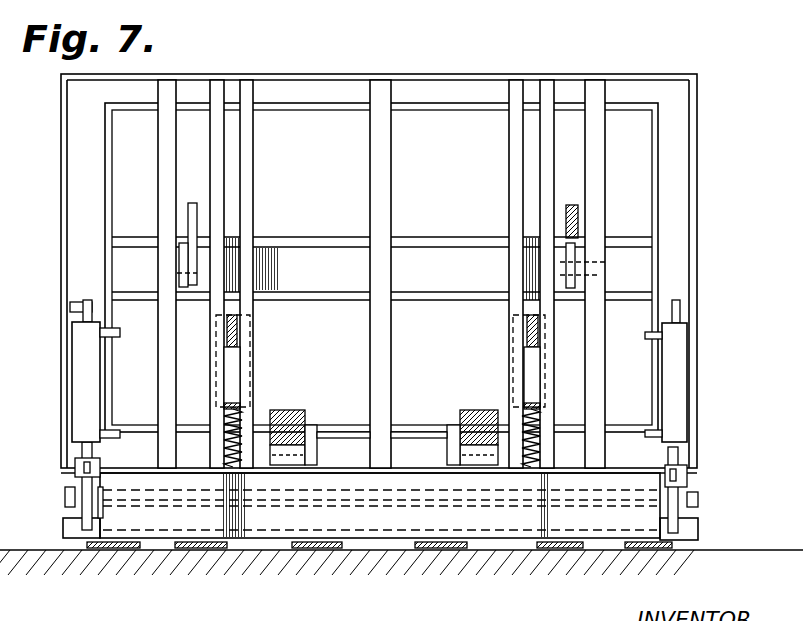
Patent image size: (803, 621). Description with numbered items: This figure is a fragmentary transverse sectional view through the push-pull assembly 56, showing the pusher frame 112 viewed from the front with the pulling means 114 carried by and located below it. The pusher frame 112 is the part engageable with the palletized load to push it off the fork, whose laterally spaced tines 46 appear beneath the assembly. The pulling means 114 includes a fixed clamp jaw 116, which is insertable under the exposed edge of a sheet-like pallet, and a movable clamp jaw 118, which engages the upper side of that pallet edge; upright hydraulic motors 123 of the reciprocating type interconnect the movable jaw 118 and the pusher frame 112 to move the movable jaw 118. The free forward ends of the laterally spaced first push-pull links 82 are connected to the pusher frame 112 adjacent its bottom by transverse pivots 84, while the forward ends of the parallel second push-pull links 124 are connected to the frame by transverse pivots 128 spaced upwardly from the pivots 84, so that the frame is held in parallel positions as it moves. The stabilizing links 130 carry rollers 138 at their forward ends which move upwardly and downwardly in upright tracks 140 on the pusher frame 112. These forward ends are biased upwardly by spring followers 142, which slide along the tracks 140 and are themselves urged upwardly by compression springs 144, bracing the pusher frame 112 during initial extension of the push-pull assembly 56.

The push-pull assembly 56 is at (694, 74).
The pusher frame 112 is at (692, 189).
The upright tracks 140 is at (247, 203).
The second push-pull links 124 is at (190, 219).
The transverse pivots 128 is at (197, 258).
The rollers 138 is at (216, 315).
The links 130 is at (237, 330).
The spring followers 142 is at (232, 372).
The compression springs 144 is at (224, 440).
The first push-pull links 82 is at (288, 410).
The transverse pivots 84 is at (315, 428).
The fixed clamp jaw 116 is at (397, 519).
The movable clamp jaw 118 is at (72, 496).
The upright hydraulic motors 123 is at (80, 388).
The tines 46 is at (195, 550).
The pulling means 114 is at (272, 549).